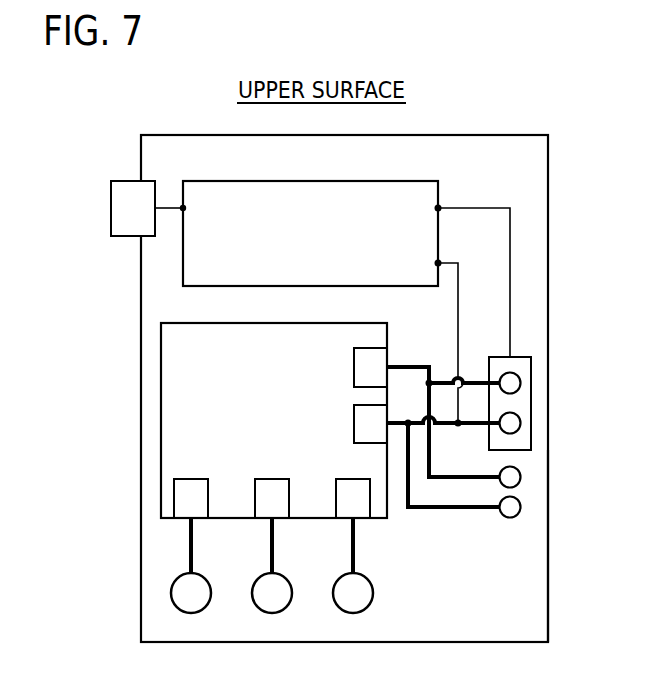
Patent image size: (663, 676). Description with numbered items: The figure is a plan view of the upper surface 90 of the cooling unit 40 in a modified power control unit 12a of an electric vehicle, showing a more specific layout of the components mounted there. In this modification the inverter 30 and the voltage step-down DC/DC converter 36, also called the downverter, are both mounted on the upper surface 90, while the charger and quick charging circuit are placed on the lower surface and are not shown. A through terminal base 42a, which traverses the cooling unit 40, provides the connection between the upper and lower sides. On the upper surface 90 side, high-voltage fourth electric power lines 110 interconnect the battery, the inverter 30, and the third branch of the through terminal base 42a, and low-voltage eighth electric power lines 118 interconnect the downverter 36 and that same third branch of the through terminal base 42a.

The power control unit 12a is at (115, 114).
The inverter 30 is at (161, 405).
The voltage step-down DC/DC converter 36 is at (265, 181).
The cooling unit 40 is at (548, 537).
The through terminal base 42a is at (531, 405).
The upper surface 90 is at (535, 172).
The fourth electric power lines 110 is at (390, 423).
The eighth electric power lines 118 is at (510, 278).